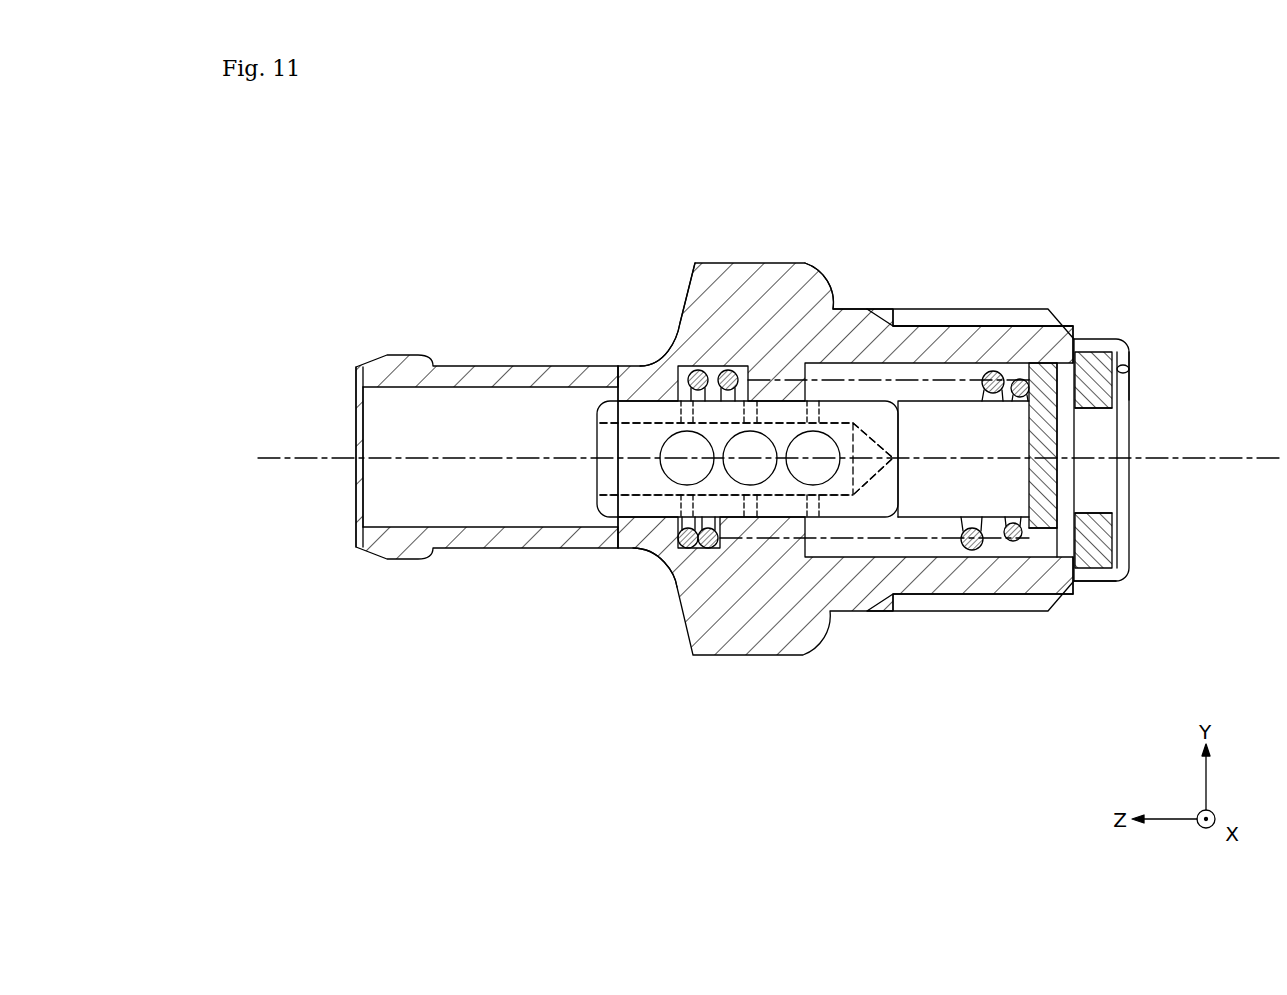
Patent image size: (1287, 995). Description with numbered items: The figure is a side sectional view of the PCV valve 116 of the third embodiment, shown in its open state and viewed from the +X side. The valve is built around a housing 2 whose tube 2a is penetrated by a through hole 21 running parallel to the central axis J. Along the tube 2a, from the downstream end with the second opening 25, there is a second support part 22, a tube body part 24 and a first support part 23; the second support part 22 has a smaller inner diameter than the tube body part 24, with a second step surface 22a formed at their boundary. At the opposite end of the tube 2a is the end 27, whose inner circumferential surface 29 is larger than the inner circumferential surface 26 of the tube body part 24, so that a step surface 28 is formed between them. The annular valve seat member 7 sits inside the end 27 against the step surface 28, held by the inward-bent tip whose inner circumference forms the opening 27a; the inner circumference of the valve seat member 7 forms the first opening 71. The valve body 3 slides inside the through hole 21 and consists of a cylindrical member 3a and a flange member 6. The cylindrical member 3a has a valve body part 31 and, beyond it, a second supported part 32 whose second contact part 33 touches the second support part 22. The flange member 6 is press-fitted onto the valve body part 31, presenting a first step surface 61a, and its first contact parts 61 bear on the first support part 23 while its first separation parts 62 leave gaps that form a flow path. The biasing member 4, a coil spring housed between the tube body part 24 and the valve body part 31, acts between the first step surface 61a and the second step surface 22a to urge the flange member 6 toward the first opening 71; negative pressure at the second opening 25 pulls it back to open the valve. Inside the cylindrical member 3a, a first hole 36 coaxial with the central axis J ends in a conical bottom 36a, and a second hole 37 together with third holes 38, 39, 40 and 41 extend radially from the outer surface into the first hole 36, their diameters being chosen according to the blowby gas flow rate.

The PCV valve 116 is at (1103, 158).
The housing 2 is at (758, 275).
The tube 2a is at (835, 305).
The second step surface 22a is at (683, 320).
The through hole 21 is at (510, 397).
The second opening 25 is at (382, 528).
The second support part 22 is at (640, 382).
The first support part 23 is at (1043, 348).
The tube body part 24 is at (862, 345).
The valve body 3 is at (888, 505).
The cylindrical member 3a is at (960, 560).
The valve body part 31 is at (865, 505).
The second supported part 32 is at (636, 548).
The second contact part 33 is at (598, 505).
The first hole 36 is at (597, 440).
The bottom 36a is at (885, 443).
The second hole 37 is at (676, 450).
The third hole 38 is at (758, 483).
The third hole 39 is at (820, 482).
The third hole 40 is at (697, 545).
The third hole 41 is at (797, 500).
The biasing member 4 is at (990, 370).
The first step surface 61a is at (1018, 378).
The first contact part 61 is at (1047, 373).
The flange member 6 is at (1050, 495).
The first separation part 62 is at (1045, 530).
The valve seat member 7 is at (1122, 342).
The end 27 is at (1130, 366).
The opening 27a is at (1131, 380).
The step surface 28 is at (1087, 570).
The inner circumferential surface 29 is at (1095, 358).
The inner circumferential surface 26 is at (1093, 542).
The first opening 71 is at (1095, 408).
The central axis J is at (280, 455).